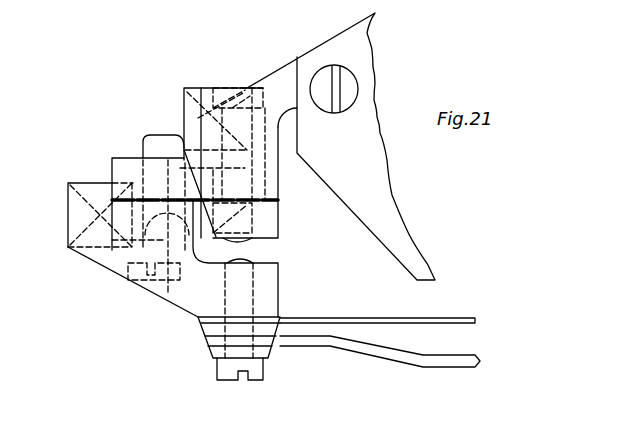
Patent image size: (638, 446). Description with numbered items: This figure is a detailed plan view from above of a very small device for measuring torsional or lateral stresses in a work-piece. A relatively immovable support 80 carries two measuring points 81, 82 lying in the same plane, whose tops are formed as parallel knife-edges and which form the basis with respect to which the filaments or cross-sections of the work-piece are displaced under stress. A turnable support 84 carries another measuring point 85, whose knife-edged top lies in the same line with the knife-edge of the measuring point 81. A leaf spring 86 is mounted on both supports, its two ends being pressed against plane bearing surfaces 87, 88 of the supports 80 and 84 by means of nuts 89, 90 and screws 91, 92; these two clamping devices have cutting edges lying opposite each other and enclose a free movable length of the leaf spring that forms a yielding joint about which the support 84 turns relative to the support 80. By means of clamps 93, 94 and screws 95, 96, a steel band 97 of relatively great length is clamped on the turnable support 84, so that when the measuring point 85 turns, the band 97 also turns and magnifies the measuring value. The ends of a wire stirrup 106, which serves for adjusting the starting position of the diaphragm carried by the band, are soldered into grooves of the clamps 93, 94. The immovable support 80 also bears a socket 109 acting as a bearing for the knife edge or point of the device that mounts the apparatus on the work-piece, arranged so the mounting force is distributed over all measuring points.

The support 80 is at (270, 143).
The measuring point 81 is at (195, 173).
The measuring point 82 is at (197, 97).
The turnable support 84 is at (202, 287).
The measuring point 85 is at (87, 210).
The leaf spring 86 is at (265, 205).
The plane bearing surface 87 is at (233, 195).
The plane bearing surface 88 is at (168, 175).
The nut 89 is at (267, 230).
The nut 90 is at (123, 173).
The screw 91 is at (252, 85).
The screw 92 is at (160, 252).
The clamp 93 is at (271, 356).
The clamp 94 is at (267, 327).
The screw 95 is at (258, 396).
The screw 96 is at (253, 370).
The steel band 97 is at (440, 322).
The wire stirrup 106 is at (442, 362).
The socket 109 is at (167, 143).